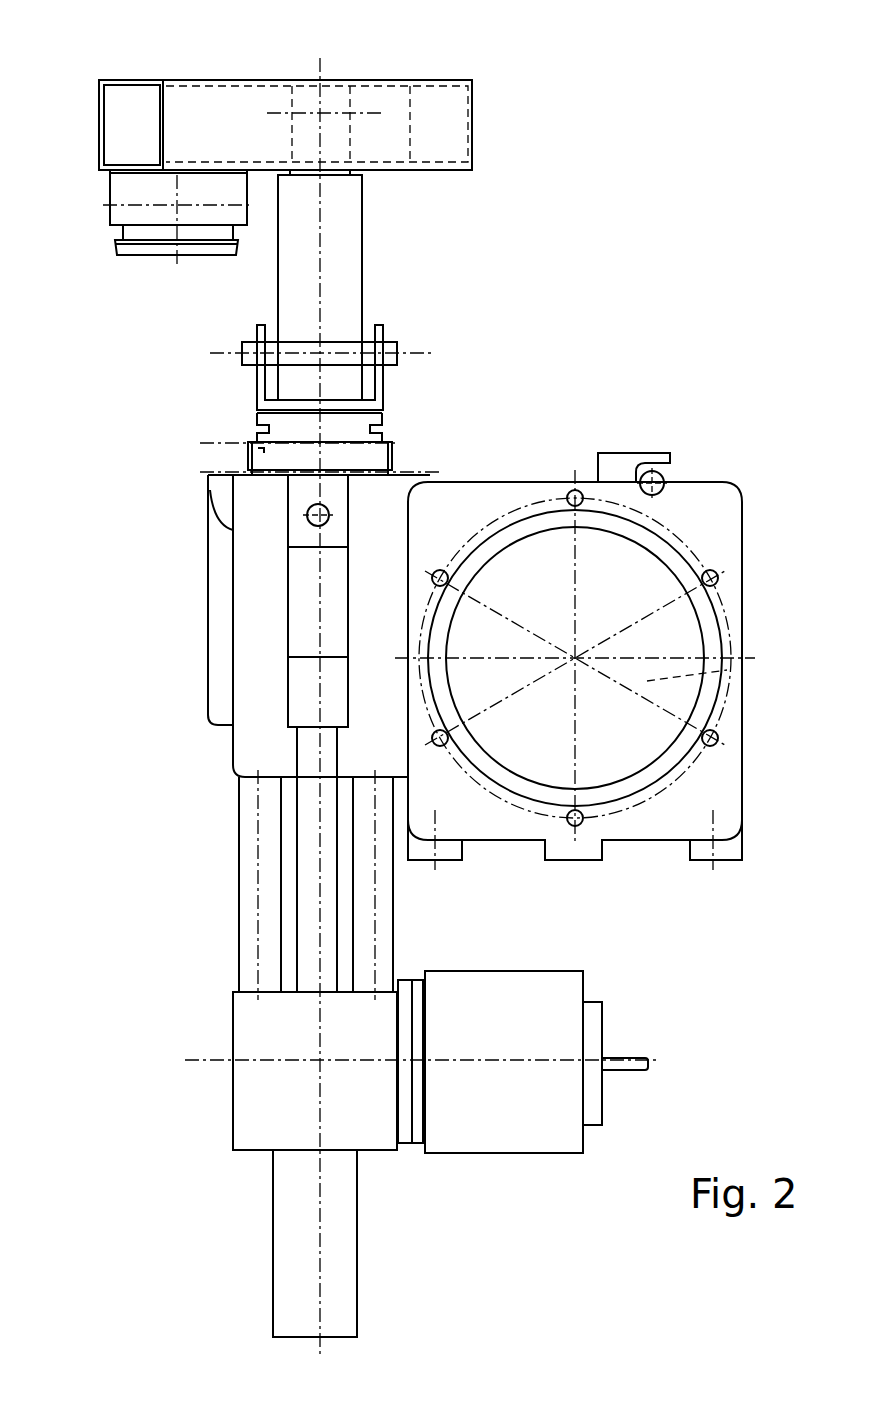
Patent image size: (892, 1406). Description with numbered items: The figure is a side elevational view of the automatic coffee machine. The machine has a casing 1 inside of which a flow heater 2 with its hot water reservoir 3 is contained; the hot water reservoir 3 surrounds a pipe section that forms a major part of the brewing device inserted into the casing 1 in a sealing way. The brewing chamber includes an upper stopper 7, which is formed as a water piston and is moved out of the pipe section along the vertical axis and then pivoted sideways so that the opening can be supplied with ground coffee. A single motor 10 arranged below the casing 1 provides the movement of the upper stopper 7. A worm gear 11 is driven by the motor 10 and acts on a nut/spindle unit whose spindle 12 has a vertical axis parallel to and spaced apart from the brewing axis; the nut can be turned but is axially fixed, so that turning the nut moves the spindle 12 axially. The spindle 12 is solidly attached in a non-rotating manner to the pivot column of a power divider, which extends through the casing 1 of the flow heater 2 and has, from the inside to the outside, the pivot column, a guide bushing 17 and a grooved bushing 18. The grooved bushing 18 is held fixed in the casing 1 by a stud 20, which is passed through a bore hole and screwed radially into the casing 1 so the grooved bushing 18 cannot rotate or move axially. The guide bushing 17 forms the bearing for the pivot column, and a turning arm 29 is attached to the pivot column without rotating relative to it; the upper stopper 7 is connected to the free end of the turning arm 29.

The casing 1 is at (718, 512).
The flow heater 2 is at (672, 636).
The hot water reservoir 3 is at (727, 670).
The upper stopper 7 is at (201, 195).
The motor 10 is at (506, 1125).
The worm gear 11 is at (350, 1120).
The spindle 12 is at (304, 872).
The guide bushing 17 is at (285, 427).
The grooved bushing 18 is at (263, 451).
The stud 20 is at (310, 517).
The turning arm 29 is at (241, 110).